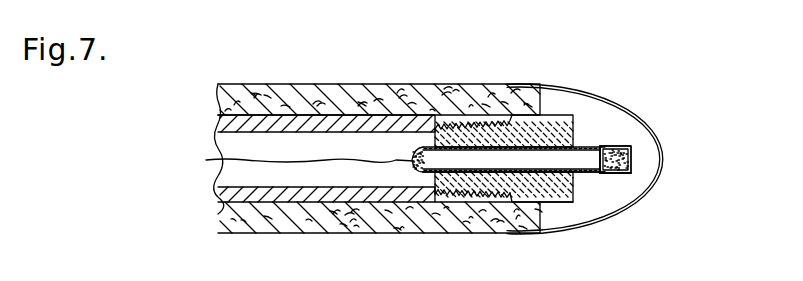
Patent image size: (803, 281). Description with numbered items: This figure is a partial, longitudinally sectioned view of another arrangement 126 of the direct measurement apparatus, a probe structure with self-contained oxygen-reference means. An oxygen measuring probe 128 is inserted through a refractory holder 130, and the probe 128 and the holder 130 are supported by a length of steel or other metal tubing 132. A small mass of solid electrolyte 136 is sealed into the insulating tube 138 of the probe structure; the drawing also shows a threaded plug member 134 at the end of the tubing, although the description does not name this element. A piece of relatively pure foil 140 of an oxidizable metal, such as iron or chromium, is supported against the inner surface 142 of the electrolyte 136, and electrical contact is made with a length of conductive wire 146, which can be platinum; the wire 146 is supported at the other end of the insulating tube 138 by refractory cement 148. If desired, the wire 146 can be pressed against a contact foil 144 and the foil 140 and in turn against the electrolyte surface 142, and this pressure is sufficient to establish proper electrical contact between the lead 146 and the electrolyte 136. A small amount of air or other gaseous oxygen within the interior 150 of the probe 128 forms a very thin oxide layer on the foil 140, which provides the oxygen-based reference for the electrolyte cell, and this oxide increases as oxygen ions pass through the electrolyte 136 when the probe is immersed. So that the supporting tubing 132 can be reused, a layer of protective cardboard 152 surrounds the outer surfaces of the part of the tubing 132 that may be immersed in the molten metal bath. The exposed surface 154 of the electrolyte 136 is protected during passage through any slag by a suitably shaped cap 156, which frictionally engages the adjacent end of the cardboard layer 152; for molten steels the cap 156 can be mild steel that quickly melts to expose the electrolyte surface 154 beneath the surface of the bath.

The arrangement of direct measurement apparatus 126 is at (392, 84).
The oxygen measuring probe 128 is at (582, 146).
The refractory holder 130 is at (582, 175).
The metal tubing 132 is at (282, 120).
The threaded plug 134 is at (460, 125).
The solid electrolyte 136 is at (632, 159).
The insulating tube 138 is at (601, 177).
The oxidizable metal foil 140 is at (626, 146).
The inner surface of electrolyte 142 is at (632, 150).
The contact foil 144 is at (612, 176).
The conductive wire 146 is at (603, 141).
The refractory cement 148 is at (411, 168).
The interior of probe 150 is at (528, 153).
The protective cardboard layer 152 is at (318, 216).
The exposed surface of electrolyte 154 is at (632, 167).
The cap 156 is at (572, 203).